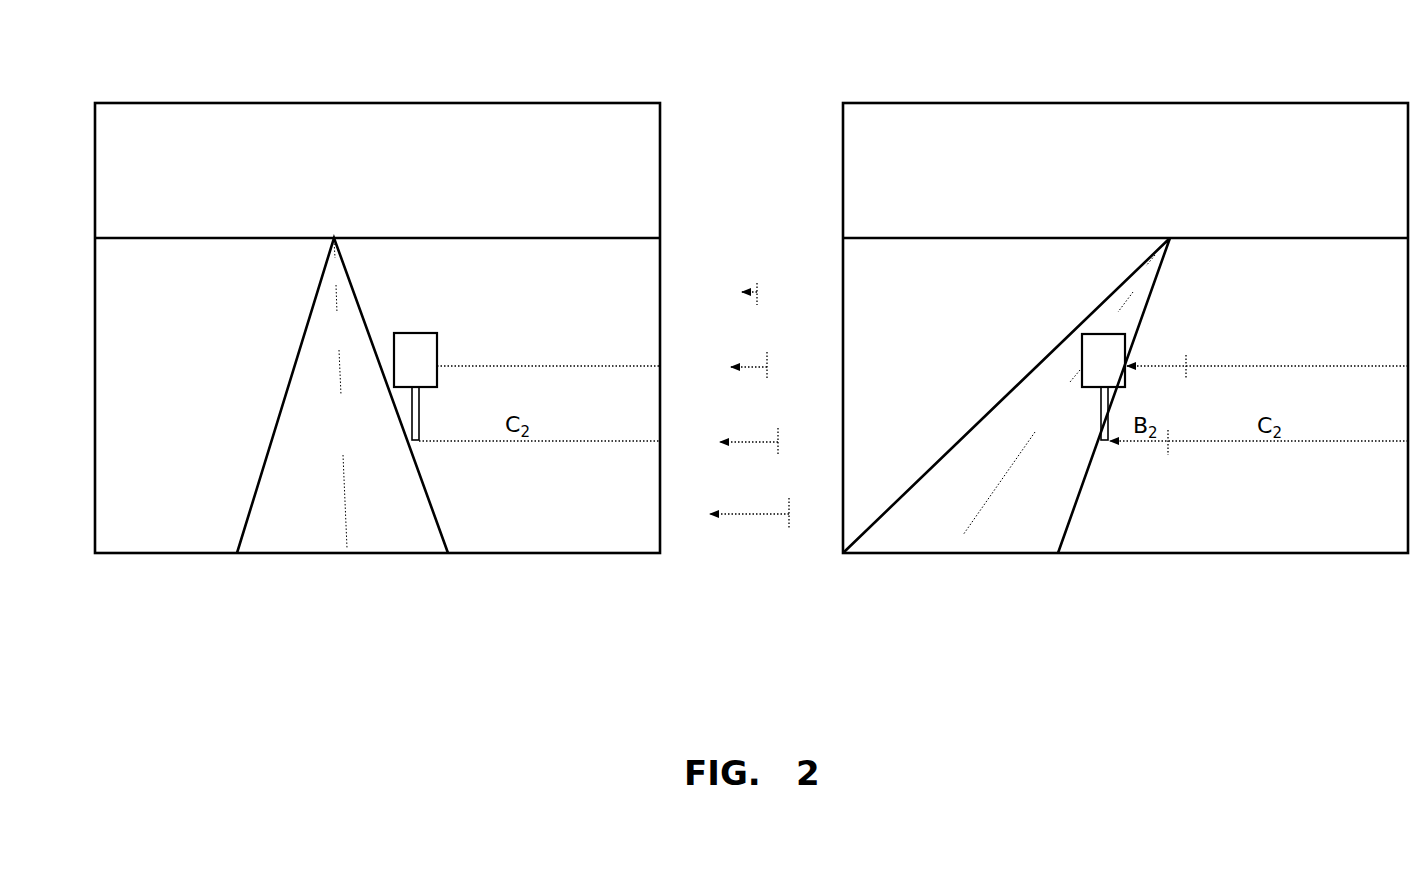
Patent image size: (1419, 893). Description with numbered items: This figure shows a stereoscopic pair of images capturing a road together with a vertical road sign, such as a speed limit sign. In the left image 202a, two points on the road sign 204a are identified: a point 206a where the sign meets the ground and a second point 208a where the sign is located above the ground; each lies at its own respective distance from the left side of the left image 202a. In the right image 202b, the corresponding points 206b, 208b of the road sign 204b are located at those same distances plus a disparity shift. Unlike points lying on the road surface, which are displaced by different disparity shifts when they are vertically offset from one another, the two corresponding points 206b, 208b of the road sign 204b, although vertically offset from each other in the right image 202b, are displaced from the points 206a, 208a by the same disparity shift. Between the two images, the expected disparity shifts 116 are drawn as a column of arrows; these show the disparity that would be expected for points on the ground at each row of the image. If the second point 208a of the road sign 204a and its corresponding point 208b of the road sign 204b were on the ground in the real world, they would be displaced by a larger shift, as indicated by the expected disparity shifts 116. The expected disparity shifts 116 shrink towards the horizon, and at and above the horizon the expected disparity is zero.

The left image 202a is at (362, 103).
The right image 202b is at (1158, 103).
The expected disparity shifts 116 is at (768, 116).
The road sign 204a is at (424, 333).
The road sign 204b is at (1095, 334).
The point where the sign meets the ground 206a is at (416, 442).
The corresponding point 206b is at (1109, 442).
The second point 208a is at (437, 362).
The corresponding point 208b is at (1125, 356).